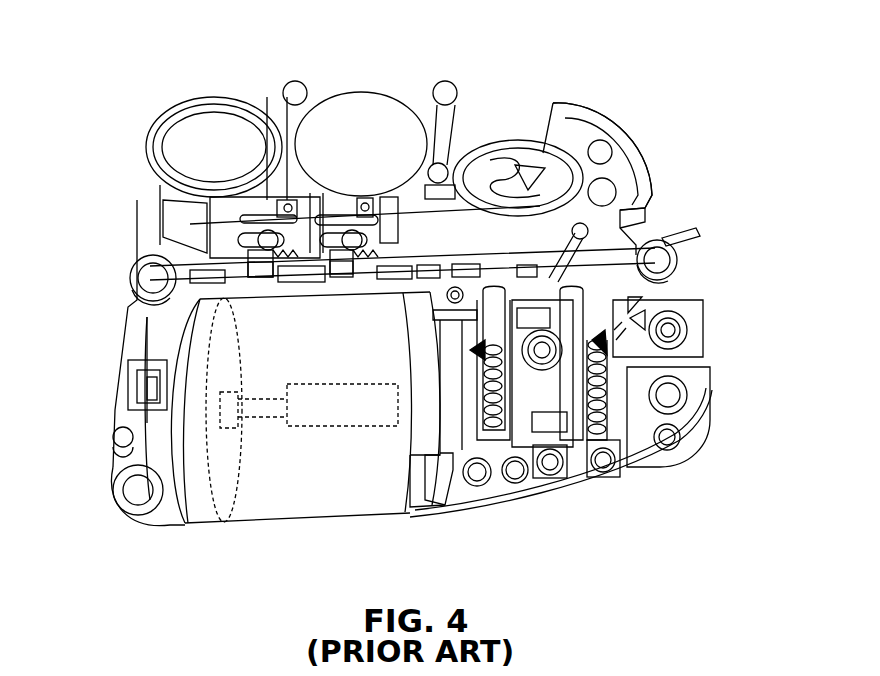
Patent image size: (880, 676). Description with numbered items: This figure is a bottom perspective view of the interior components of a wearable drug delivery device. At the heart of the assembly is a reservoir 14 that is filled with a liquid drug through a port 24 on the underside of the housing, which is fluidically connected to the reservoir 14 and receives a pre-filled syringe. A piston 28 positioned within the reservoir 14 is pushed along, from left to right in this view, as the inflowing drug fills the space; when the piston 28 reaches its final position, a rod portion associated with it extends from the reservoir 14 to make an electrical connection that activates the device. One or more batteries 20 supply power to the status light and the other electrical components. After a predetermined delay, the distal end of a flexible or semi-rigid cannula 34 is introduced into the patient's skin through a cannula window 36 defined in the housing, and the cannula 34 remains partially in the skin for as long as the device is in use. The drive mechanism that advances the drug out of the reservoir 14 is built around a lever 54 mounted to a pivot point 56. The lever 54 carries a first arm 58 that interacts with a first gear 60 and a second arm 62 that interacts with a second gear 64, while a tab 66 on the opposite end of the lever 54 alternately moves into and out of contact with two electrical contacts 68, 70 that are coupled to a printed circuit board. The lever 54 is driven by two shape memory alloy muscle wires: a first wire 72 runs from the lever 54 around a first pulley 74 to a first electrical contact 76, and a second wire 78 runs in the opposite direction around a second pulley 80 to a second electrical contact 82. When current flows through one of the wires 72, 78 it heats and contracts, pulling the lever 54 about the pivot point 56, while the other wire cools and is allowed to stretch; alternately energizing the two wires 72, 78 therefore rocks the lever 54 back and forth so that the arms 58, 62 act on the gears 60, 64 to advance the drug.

The reservoir 14 is at (345, 497).
The batteries 20 is at (346, 113).
The port 24 is at (120, 492).
The piston 28 is at (240, 470).
The cannula 34 is at (677, 233).
The cannula window 36 is at (635, 212).
The lever 54 is at (550, 390).
The pivot point 56 is at (542, 350).
The first arm 58 is at (481, 295).
The first gear 60 is at (493, 397).
The second arm 62 is at (583, 322).
The second gear 64 is at (602, 412).
The tab 66 is at (573, 470).
The electrical contact 68 is at (610, 467).
The electrical contact 70 is at (548, 462).
The first wire 72 is at (182, 260).
The first pulley 74 is at (143, 276).
The first electrical contact 76 is at (268, 236).
The second wire 78 is at (600, 247).
The second pulley 80 is at (663, 261).
The second electrical contact 82 is at (350, 236).